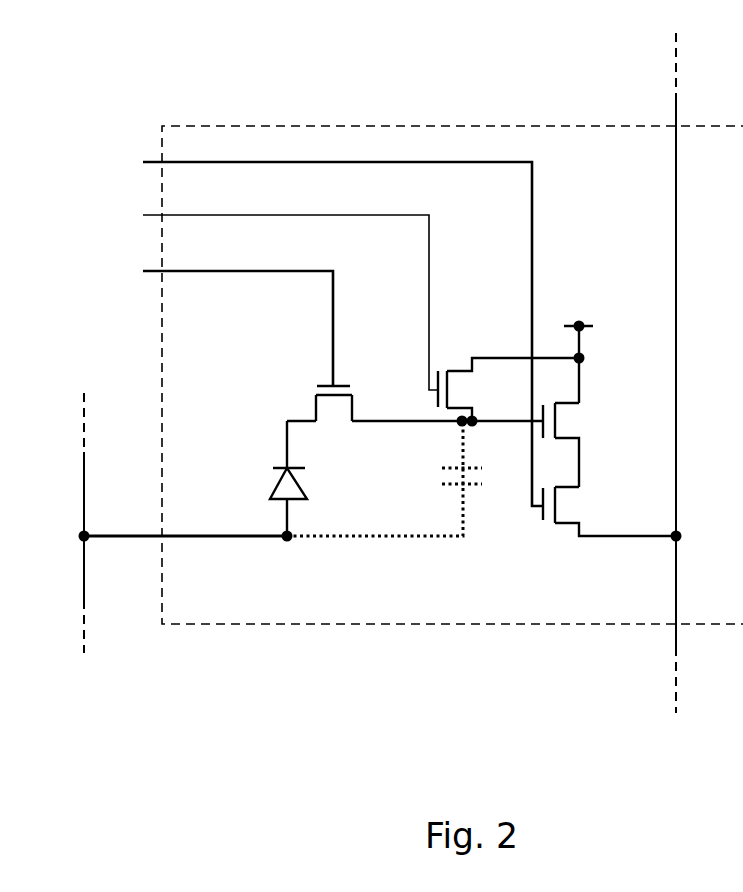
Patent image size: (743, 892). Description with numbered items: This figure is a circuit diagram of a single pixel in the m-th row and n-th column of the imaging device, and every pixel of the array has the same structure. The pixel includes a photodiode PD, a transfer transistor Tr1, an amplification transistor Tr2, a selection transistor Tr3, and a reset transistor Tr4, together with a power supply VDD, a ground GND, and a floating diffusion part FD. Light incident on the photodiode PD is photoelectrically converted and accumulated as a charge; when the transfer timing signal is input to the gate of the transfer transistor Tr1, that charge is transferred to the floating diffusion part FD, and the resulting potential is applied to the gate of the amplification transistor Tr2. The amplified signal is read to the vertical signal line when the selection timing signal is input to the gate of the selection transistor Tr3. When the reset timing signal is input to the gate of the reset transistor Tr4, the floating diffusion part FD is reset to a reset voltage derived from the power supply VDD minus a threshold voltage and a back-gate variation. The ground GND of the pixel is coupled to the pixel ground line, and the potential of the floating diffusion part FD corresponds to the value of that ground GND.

The transfer transistor Tr1 is at (415, 423).
The amplification transistor Tr2 is at (587, 445).
The selection transistor Tr3 is at (612, 514).
The reset transistor Tr4 is at (508, 389).
The photodiode PD is at (262, 481).
The floating diffusion part FD is at (384, 476).
The ground GND is at (185, 554).
The power supply VDD is at (598, 350).